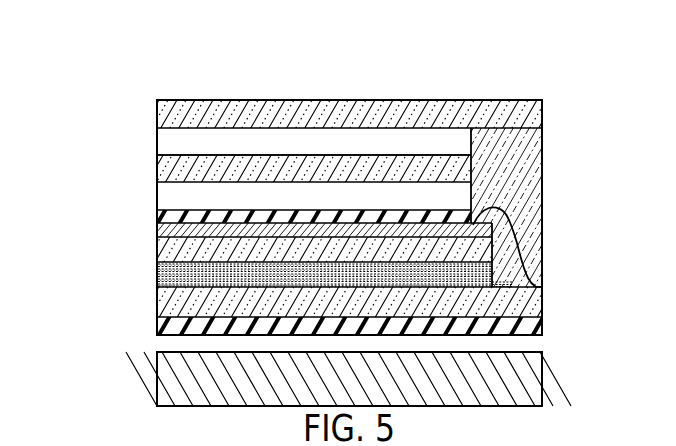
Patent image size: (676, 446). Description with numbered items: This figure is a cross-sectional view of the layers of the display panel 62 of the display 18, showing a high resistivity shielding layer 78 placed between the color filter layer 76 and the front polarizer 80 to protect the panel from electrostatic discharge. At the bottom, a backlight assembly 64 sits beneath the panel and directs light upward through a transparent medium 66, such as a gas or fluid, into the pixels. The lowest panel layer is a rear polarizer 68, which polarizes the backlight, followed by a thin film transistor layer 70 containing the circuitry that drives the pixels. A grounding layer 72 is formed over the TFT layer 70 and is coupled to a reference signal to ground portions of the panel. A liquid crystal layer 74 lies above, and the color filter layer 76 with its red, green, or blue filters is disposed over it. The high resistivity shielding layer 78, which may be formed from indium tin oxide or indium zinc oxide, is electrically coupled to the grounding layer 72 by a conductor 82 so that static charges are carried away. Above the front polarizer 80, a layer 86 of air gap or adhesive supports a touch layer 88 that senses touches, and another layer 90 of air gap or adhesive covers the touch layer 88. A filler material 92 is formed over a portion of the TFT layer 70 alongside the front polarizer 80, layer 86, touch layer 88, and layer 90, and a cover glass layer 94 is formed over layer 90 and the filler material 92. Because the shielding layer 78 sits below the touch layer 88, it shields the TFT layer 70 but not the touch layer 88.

The display 18 is at (148, 61).
The display panel 62 is at (85, 270).
The backlight assembly 64 is at (157, 372).
The transparent medium 66 is at (158, 343).
The rear polarizer 68 is at (537, 322).
The thin film transistor (TFT) layer 70 is at (542, 307).
The grounding layer 72 is at (522, 265).
The liquid crystal layer 74 is at (158, 275).
The color filter layer 76 is at (158, 252).
The high resistivity shielding layer 78 is at (160, 228).
The front polarizer 80 is at (305, 212).
The conductor 82 is at (514, 226).
The layer 86 is at (160, 189).
The touch layer 88 is at (275, 158).
The layer 90 is at (160, 137).
The filler material 92 is at (541, 152).
The cover glass layer 94 is at (318, 102).